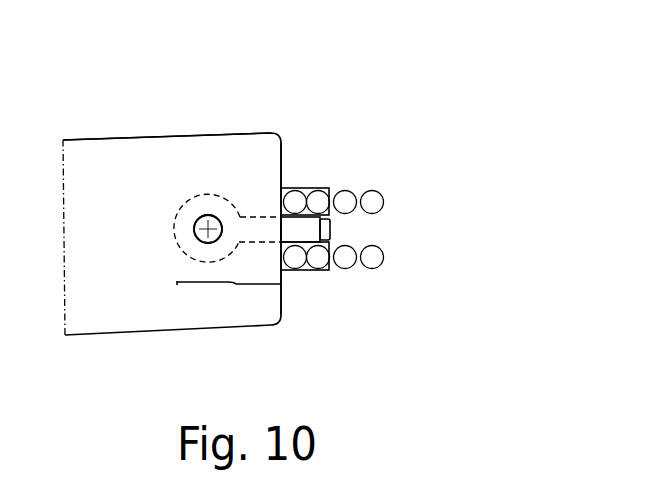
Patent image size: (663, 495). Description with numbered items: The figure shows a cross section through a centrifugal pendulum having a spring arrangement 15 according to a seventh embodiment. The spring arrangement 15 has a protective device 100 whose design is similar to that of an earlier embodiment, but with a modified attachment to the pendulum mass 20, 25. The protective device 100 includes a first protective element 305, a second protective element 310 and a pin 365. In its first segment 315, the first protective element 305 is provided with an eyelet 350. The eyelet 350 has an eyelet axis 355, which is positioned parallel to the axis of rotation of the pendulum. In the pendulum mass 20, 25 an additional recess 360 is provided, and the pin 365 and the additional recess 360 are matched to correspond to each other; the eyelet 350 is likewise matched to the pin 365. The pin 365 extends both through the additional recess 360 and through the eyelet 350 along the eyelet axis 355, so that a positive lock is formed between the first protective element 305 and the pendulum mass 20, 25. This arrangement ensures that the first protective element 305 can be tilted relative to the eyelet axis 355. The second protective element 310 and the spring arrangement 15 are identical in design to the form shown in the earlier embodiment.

The pendulum mass 20 is at (80, 157).
The pendulum mass 25 is at (167, 136).
The spring arrangement 15 is at (297, 147).
The protective device 100 is at (284, 338).
The first protective element 305 is at (271, 225).
The second protective element 310 is at (302, 265).
The first segment 315 is at (233, 285).
The eyelet 350 is at (210, 215).
The eyelet axis 355 is at (209, 215).
The additional recess 360 is at (185, 223).
The pin 365 is at (194, 240).